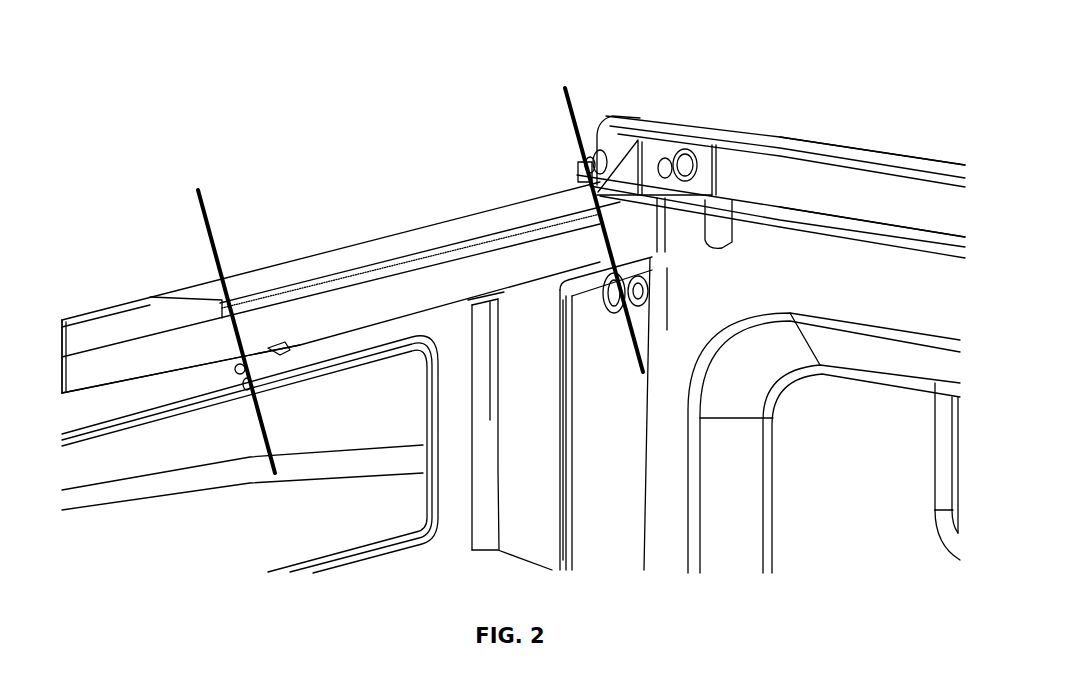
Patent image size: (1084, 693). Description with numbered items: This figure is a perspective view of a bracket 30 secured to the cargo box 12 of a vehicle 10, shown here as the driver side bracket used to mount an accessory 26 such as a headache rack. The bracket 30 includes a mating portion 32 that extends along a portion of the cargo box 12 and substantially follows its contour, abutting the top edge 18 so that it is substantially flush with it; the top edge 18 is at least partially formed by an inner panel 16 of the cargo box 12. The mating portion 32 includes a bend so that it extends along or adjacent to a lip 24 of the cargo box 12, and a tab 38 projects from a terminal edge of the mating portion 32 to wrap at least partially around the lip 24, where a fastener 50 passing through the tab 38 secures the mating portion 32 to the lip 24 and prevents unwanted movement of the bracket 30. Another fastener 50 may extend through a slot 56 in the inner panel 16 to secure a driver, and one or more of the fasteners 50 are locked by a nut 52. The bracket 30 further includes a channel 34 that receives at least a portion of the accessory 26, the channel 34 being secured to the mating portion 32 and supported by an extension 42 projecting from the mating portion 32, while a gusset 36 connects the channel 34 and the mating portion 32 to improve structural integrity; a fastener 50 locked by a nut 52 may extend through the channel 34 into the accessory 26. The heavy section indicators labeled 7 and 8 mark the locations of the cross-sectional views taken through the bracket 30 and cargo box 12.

The vehicle 10 is at (213, 111).
The cargo box 12 is at (113, 293).
The inner panel 16 is at (455, 357).
The top edge 18 is at (80, 333).
The lip 24 is at (93, 397).
The accessory 26 is at (822, 187).
The bracket 30 is at (368, 237).
The mating portion 32 is at (302, 266).
The channel 34 is at (705, 190).
The gusset 36 is at (625, 180).
The tab 38 is at (272, 353).
The extension 42 is at (702, 222).
The fastener 50 is at (238, 374).
The nut 52 is at (603, 160).
The slot 56 is at (610, 318).
The section line 7 is at (552, 108).
The section line 8 is at (185, 211).